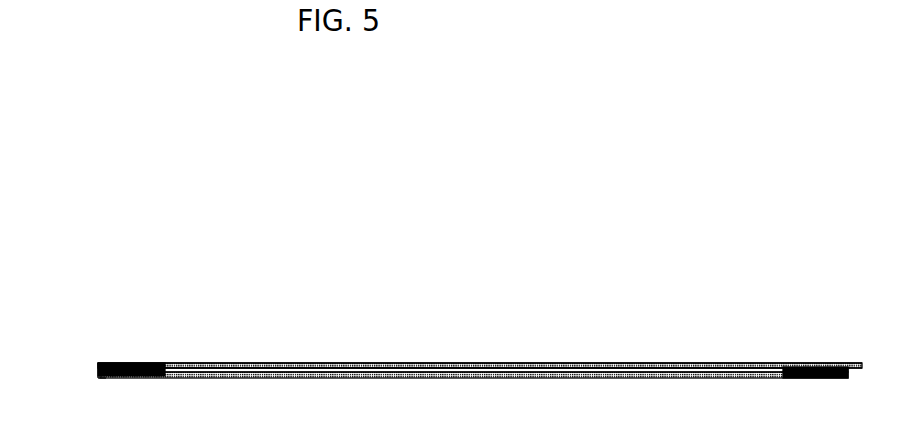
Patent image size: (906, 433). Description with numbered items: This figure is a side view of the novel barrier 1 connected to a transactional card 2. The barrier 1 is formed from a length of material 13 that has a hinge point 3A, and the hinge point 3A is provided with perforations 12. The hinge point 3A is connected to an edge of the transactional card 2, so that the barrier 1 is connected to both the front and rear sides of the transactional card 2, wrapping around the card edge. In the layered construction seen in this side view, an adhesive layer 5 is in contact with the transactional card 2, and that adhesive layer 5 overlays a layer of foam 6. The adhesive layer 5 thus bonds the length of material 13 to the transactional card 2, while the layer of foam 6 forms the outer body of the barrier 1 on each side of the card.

The barrier 1 is at (223, 363).
The transactional card 2 is at (292, 370).
The adhesive layer 5 is at (385, 365).
The layer of foam 6 is at (505, 363).
The length of material 13 is at (588, 367).
The perforations 12 is at (98, 365).
The hinge point 3A is at (98, 372).